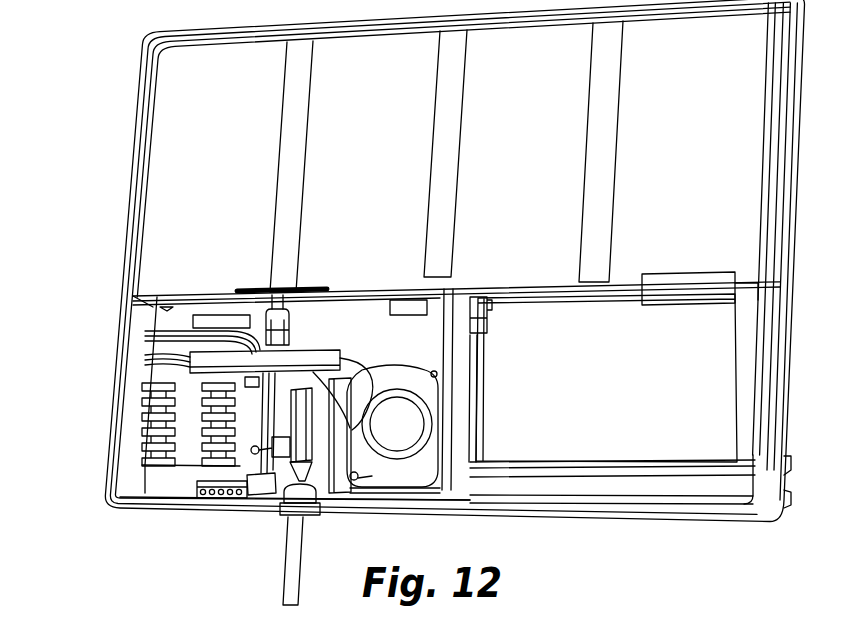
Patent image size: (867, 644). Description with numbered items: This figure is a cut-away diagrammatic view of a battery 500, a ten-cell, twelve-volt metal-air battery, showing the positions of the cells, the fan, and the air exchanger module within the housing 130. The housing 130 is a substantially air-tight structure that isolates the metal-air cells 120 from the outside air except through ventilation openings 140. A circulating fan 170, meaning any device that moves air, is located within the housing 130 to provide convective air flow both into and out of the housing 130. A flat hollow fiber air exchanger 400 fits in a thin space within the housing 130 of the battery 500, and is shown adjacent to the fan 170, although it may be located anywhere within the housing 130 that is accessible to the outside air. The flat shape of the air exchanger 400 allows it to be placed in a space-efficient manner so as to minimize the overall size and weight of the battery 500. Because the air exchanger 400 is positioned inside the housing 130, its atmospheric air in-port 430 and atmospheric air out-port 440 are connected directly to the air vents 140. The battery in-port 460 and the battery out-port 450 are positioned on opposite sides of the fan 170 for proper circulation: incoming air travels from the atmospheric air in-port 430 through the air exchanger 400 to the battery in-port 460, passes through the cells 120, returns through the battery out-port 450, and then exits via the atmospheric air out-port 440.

The metal-air cell 120 is at (222, 167).
The housing 130 is at (217, 512).
The ventilation openings 140 is at (147, 328).
The circulating fan 170 is at (420, 428).
The flat hollow fiber air exchanger 400 is at (220, 406).
The atmospheric air in-port 430 is at (190, 365).
The atmospheric air out-port 440 is at (247, 340).
The battery out-port 450 is at (262, 382).
The battery in-port 460 is at (355, 362).
The battery 500 is at (622, 528).